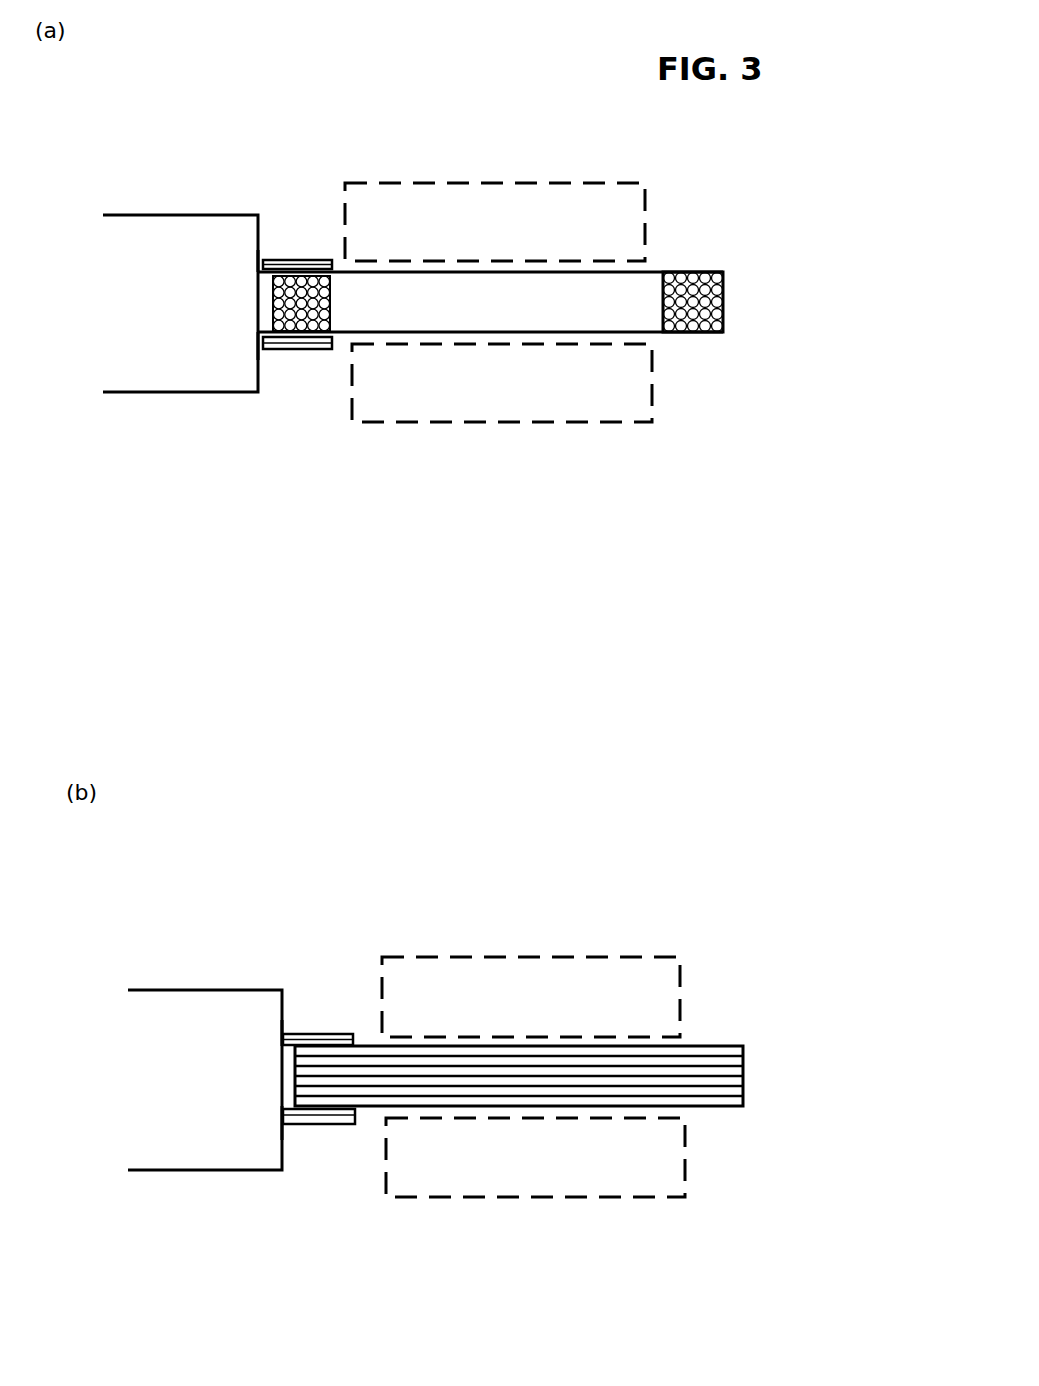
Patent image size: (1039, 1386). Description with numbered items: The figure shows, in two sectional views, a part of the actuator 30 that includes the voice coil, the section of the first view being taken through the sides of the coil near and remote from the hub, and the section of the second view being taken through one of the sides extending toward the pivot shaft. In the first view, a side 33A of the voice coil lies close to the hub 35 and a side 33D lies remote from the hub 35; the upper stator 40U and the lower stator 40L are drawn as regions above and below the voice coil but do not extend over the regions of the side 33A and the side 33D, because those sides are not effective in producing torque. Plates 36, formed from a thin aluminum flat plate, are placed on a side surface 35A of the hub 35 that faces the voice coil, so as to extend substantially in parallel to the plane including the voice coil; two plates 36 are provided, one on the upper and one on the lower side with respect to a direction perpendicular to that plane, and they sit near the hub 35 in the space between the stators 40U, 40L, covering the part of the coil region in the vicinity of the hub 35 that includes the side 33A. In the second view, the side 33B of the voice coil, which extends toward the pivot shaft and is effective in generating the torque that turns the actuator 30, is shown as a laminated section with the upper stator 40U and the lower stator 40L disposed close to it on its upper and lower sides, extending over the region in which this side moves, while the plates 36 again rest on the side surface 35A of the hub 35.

The actuator 30 is at (338, 64).
The hub 35 is at (170, 215).
The side surface of the hub 35A is at (270, 240).
The plates 36 is at (313, 258).
The side of the voice coil near the hub 33A is at (318, 350).
The side of the voice coil remote from the hub 33D is at (689, 271).
The side of the voice coil extending toward the pivot shaft 33B is at (680, 1085).
The upper stator 40U is at (508, 182).
The lower stator 40L is at (495, 425).